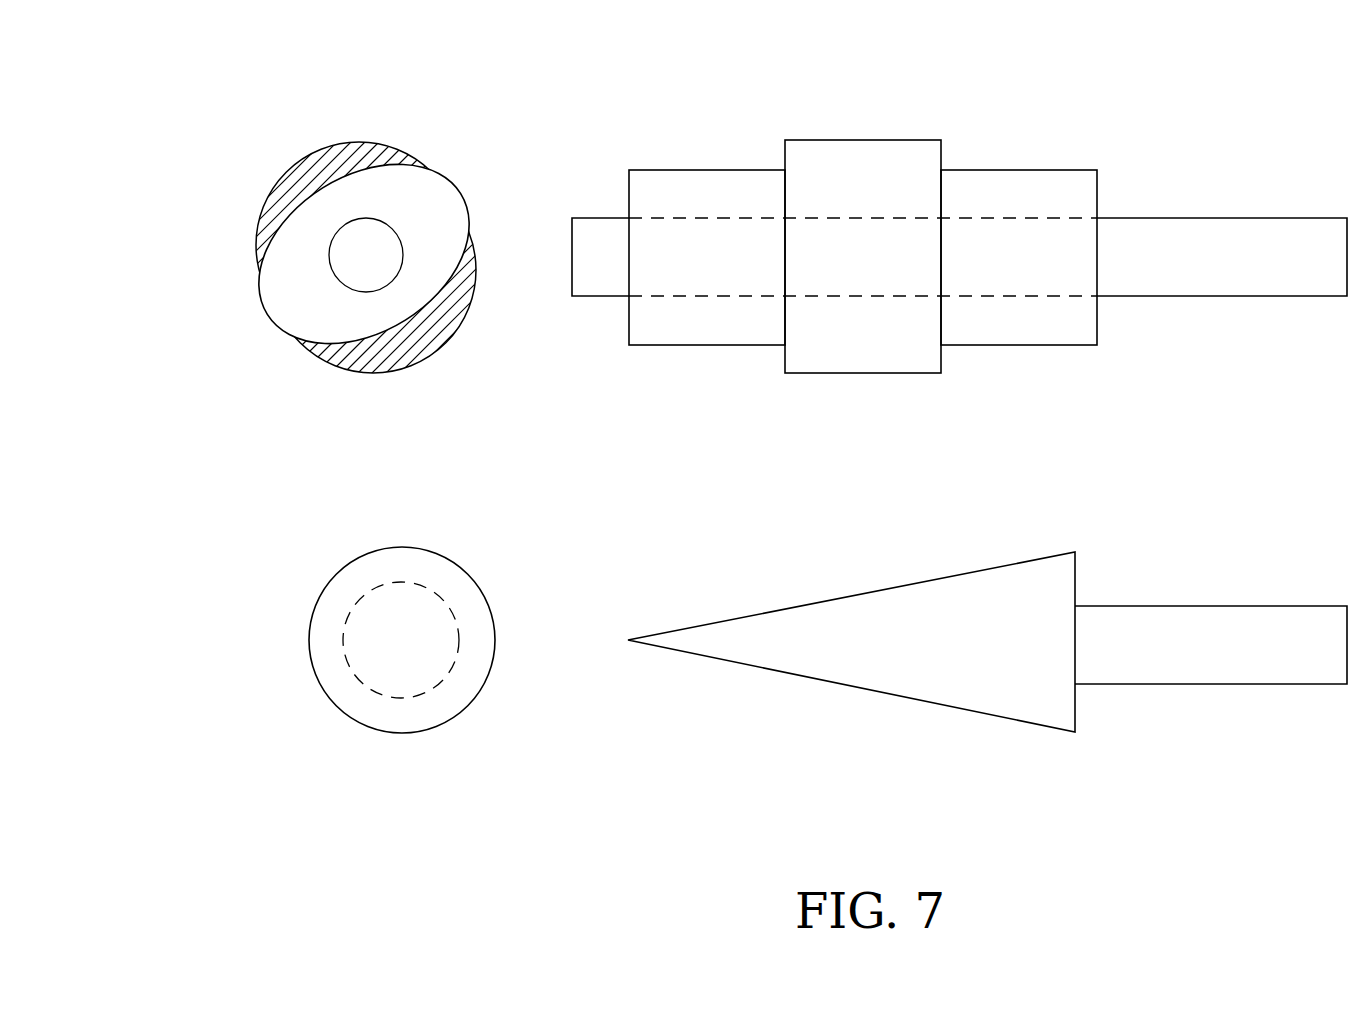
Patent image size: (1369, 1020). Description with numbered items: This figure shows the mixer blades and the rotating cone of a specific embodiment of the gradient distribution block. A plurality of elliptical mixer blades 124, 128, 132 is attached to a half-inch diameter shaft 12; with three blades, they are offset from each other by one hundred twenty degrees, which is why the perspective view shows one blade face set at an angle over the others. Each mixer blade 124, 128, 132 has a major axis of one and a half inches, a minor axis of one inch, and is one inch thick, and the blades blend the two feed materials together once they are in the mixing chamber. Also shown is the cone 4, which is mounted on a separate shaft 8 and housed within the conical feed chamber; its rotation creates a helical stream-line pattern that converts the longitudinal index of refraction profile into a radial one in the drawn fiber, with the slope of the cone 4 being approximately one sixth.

The cone 4 is at (793, 639).
The shaft 8 is at (1163, 665).
The shaft 12 is at (1217, 297).
The elliptical mixer blade 124 is at (430, 325).
The mixer blade 128 is at (338, 312).
The mixer blade 132 is at (390, 140).